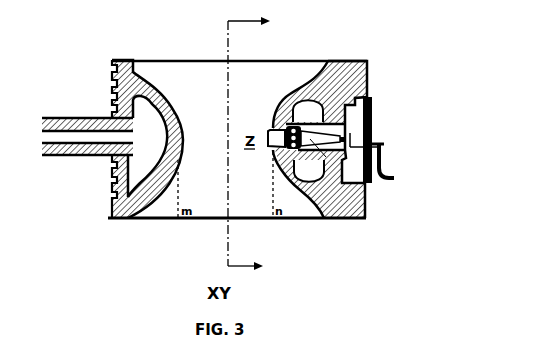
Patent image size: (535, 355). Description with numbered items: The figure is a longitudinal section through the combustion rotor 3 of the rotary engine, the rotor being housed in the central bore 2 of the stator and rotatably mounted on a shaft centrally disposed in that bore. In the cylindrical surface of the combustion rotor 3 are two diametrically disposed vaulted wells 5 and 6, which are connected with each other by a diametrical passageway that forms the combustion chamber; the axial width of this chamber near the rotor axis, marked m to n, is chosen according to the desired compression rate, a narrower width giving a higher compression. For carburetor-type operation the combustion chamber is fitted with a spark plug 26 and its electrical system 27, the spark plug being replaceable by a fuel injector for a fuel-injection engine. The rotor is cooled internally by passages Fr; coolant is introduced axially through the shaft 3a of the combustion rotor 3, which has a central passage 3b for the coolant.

The central bore 2 is at (259, 146).
The combustion rotor 3 is at (140, 75).
The shaft 3a is at (73, 121).
The central passage 3b is at (56, 136).
The vaulted well 5 is at (283, 71).
The vaulted well 6 is at (258, 218).
The spark plug 26 is at (365, 206).
The electrical system 27 is at (380, 168).